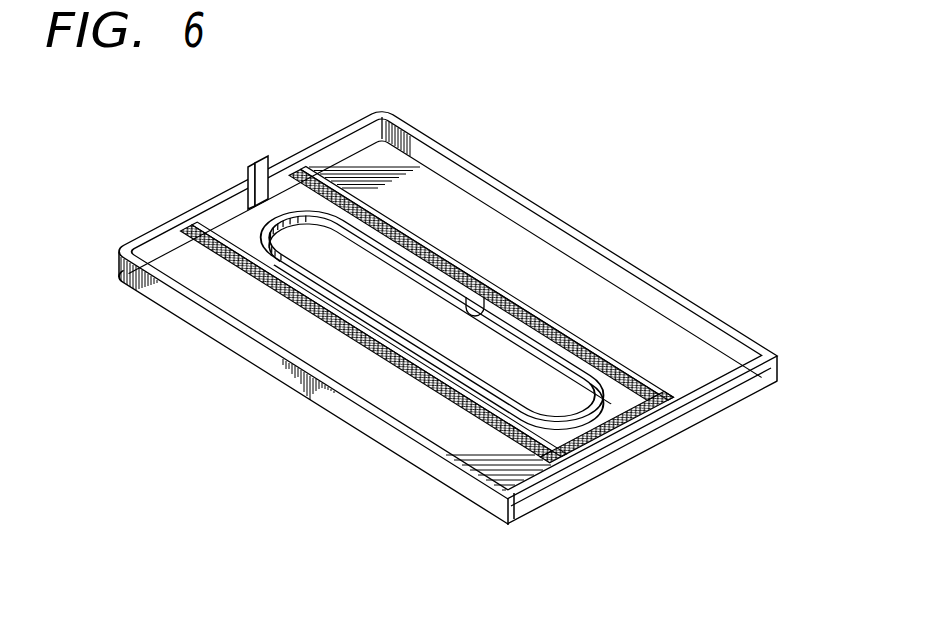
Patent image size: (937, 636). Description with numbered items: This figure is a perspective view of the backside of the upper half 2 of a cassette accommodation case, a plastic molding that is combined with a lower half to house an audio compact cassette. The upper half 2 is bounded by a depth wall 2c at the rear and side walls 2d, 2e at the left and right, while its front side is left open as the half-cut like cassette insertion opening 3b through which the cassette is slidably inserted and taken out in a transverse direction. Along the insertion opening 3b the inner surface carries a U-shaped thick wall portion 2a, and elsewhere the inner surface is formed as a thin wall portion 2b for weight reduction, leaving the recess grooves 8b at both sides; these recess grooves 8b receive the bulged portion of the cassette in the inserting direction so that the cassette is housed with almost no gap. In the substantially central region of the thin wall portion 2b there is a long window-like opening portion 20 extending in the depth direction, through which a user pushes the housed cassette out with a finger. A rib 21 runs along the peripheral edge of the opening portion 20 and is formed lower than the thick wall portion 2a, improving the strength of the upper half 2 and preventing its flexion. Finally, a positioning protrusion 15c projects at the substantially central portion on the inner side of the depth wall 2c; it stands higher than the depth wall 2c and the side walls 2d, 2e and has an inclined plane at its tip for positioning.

The upper half 2 is at (330, 413).
The U-shaped thick wall portion 2a is at (593, 336).
The thin wall portion 2b is at (624, 424).
The depth wall 2c is at (227, 201).
The side wall 2d is at (245, 345).
The side wall 2e is at (582, 247).
The cassette insertion opening 3b is at (683, 427).
The recess groove 8b is at (532, 495).
The positioning protrusion 15c is at (258, 152).
The opening portion 20 is at (477, 300).
The rib 21 is at (330, 212).